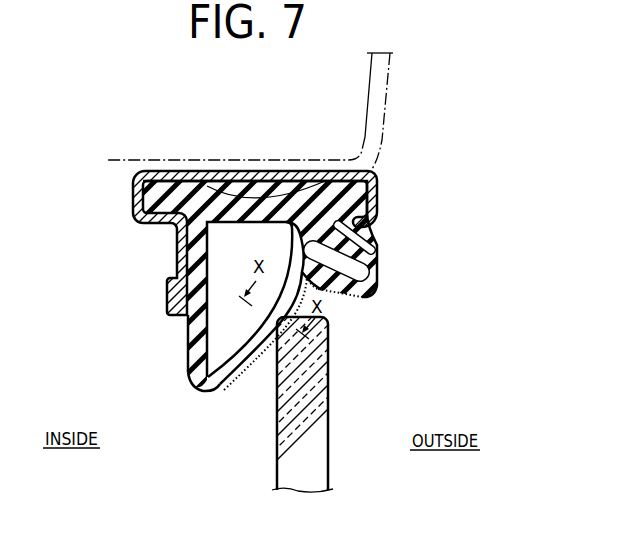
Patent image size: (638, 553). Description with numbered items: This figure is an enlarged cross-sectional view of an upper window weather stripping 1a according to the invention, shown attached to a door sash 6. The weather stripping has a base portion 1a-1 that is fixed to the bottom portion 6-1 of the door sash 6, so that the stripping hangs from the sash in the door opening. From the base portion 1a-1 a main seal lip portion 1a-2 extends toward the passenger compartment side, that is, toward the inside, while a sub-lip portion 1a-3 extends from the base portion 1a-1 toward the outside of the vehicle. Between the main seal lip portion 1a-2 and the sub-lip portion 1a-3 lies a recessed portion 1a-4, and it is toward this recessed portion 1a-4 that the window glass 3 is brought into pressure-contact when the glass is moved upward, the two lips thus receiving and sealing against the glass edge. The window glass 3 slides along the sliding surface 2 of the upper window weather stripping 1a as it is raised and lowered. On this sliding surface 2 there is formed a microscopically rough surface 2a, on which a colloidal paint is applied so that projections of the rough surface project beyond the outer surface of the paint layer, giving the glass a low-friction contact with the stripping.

The upper window weather stripping 1a is at (249, 193).
The base portion 1a-1 is at (207, 186).
The main seal lip portion 1a-2 is at (189, 378).
The sub-lip portion 1a-3 is at (376, 275).
The recessed portion 1a-4 is at (366, 302).
The sliding surface 2 is at (258, 366).
The microscopically rough surface 2a is at (242, 381).
The window glass 3 is at (325, 437).
The door sash 6 is at (379, 190).
The bottom portion of the door sash 6-1 is at (291, 157).